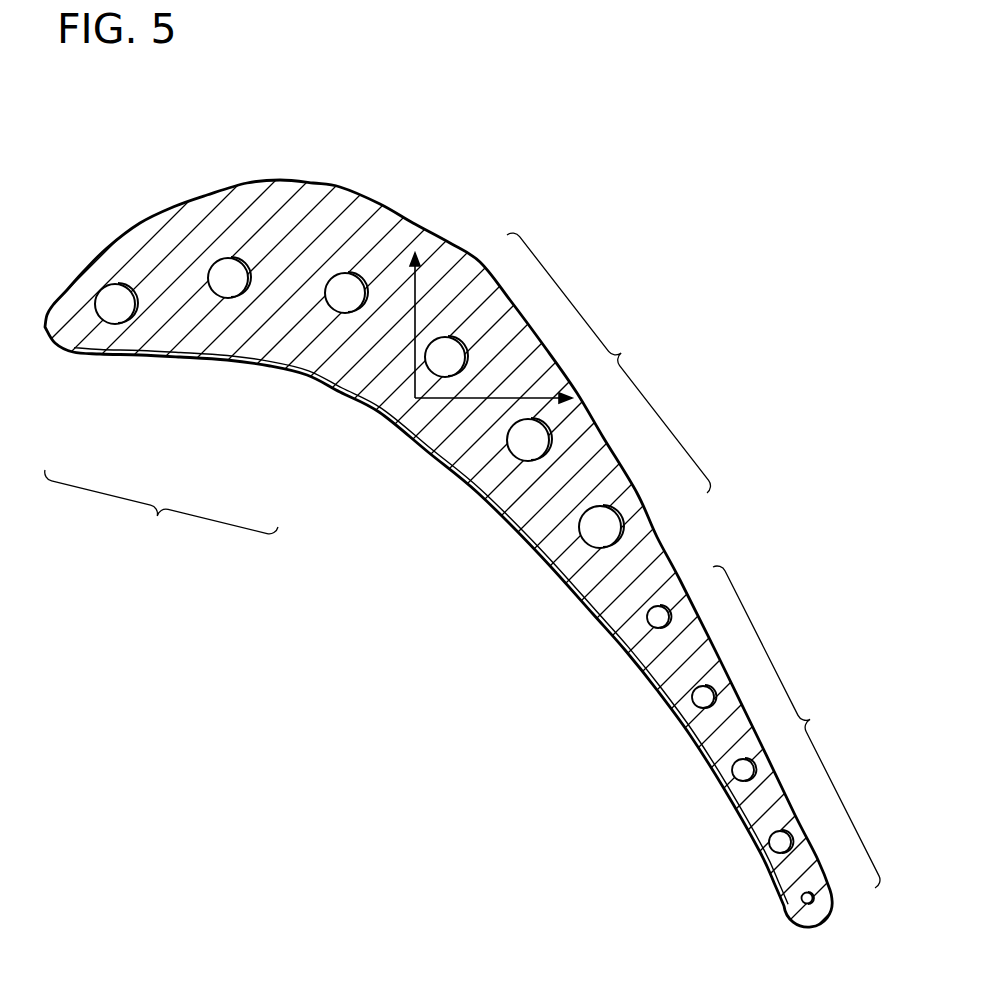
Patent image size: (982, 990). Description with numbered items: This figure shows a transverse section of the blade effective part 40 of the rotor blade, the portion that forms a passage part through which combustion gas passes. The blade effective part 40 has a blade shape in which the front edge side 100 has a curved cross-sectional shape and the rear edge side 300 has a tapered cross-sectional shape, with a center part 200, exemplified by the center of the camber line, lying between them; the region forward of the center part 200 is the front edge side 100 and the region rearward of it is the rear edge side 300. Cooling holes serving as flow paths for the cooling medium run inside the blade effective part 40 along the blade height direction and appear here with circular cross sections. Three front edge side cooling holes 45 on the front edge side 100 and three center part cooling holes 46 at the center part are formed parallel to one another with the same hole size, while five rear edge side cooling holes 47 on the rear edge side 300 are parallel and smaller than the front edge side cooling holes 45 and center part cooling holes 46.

The blade effective part 40 is at (292, 203).
The front edge side cooling holes 45 is at (345, 293).
The center part cooling holes 46 is at (600, 527).
The rear edge side cooling holes 47 is at (807, 898).
The front edge side 100 is at (161, 518).
The center part 200 is at (608, 363).
The rear edge side 300 is at (796, 727).